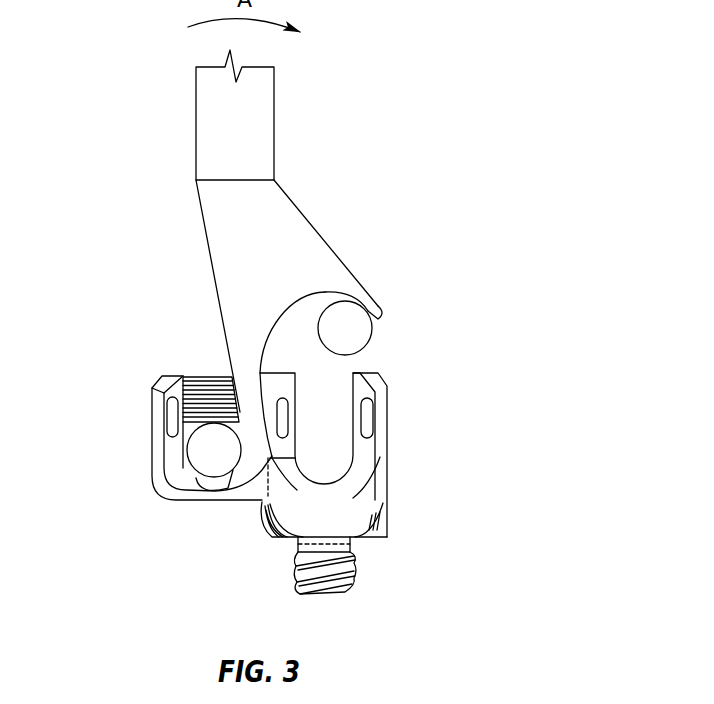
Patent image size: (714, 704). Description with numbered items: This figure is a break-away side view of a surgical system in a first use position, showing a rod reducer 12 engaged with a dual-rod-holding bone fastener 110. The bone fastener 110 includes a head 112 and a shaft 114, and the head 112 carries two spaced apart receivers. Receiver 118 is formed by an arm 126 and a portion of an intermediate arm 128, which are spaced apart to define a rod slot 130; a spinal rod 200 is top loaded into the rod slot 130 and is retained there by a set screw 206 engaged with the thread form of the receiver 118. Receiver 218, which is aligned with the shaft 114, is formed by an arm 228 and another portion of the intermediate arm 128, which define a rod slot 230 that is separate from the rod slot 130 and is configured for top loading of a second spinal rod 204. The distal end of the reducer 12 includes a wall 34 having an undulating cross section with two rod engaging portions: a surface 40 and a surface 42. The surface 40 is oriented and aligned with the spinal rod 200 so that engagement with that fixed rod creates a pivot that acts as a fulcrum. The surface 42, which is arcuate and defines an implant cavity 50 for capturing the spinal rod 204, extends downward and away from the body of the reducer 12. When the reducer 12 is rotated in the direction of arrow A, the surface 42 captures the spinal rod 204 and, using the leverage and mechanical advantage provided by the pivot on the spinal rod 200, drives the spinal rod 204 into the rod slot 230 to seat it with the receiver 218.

The rod reducer 12 is at (325, 151).
The surface 42 is at (295, 320).
The implant cavity 50 is at (362, 309).
The spinal rod 204 is at (345, 328).
The intermediate arm 128 is at (268, 373).
The receiver 218 is at (390, 436).
The arm 228 is at (383, 407).
The rod slot 230 is at (338, 388).
The receiver 118 is at (142, 452).
The arm 126 is at (152, 413).
The head 112 is at (182, 486).
The wall 34 is at (228, 408).
The set screw 206 is at (207, 408).
The rod slot 130 is at (185, 376).
The spinal rod 200 is at (213, 450).
The surface 40 is at (230, 470).
The bone fastener 110 is at (489, 530).
The shaft 114 is at (374, 579).